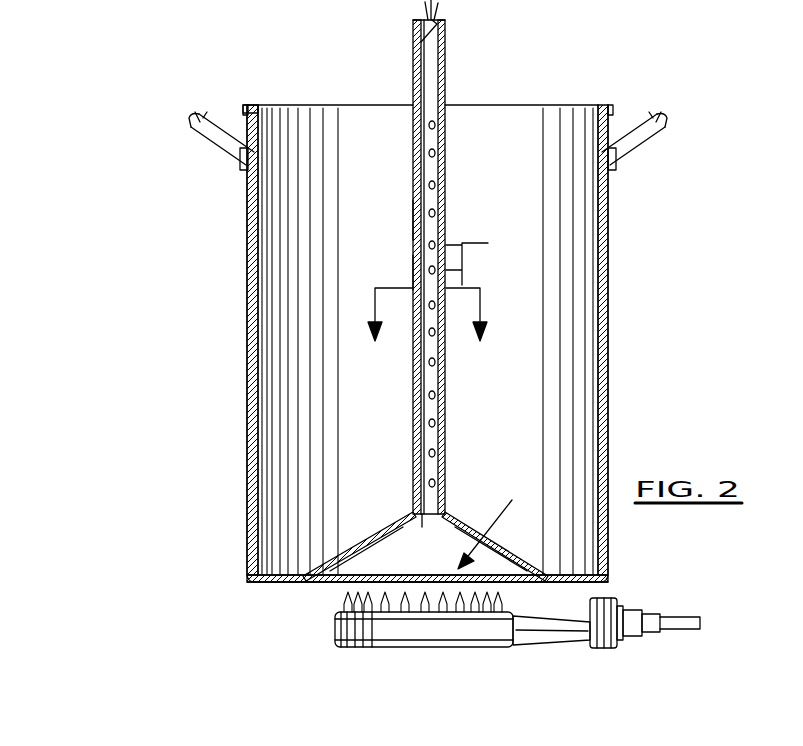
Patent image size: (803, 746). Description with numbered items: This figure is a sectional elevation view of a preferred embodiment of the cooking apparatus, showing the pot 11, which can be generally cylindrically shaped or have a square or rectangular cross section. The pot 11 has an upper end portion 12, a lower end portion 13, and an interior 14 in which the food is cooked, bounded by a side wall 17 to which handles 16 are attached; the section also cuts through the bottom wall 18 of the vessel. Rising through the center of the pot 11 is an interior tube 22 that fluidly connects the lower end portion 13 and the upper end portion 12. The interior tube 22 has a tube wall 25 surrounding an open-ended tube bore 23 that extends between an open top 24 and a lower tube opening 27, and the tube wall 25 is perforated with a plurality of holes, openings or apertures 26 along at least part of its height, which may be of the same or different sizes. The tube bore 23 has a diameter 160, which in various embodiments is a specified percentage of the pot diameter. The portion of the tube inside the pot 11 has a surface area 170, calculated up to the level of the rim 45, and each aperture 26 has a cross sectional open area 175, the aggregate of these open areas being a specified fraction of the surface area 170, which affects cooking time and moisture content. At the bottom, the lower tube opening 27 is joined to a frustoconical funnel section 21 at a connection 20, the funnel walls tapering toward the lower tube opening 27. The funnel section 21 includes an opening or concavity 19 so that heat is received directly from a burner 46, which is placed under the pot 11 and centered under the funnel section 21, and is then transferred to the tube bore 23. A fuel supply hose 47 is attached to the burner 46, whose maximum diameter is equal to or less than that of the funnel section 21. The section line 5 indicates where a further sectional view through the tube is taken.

The pot 11 is at (90, 340).
The upper end portion 12 is at (608, 105).
The lower end portion 13 is at (255, 0).
The interior 14 is at (350, 125).
The handles 16 is at (210, 145).
The side wall 17 is at (248, 345).
The bottom wall 18 is at (268, 582).
The opening or concavity 19 is at (495, 523).
The connection 20 is at (412, 510).
The funnel section 21 is at (340, 585).
The interior tube 22 is at (446, 156).
The tube bore 23 is at (432, 85).
The open top 24 is at (418, 2).
The tube wall 25 is at (413, 225).
The holes/openings/apertures 26 is at (441, 215).
The lower tube opening 27 is at (422, 524).
The rim 45 is at (248, 105).
The burner 46 is at (440, 640).
The fuel supply hose 47 is at (690, 636).
The diameter 160 is at (447, 18).
The surface area 170 is at (413, 268).
The cross sectional open area 175 is at (491, 256).
The section line 5- 5 is at (426, 331).